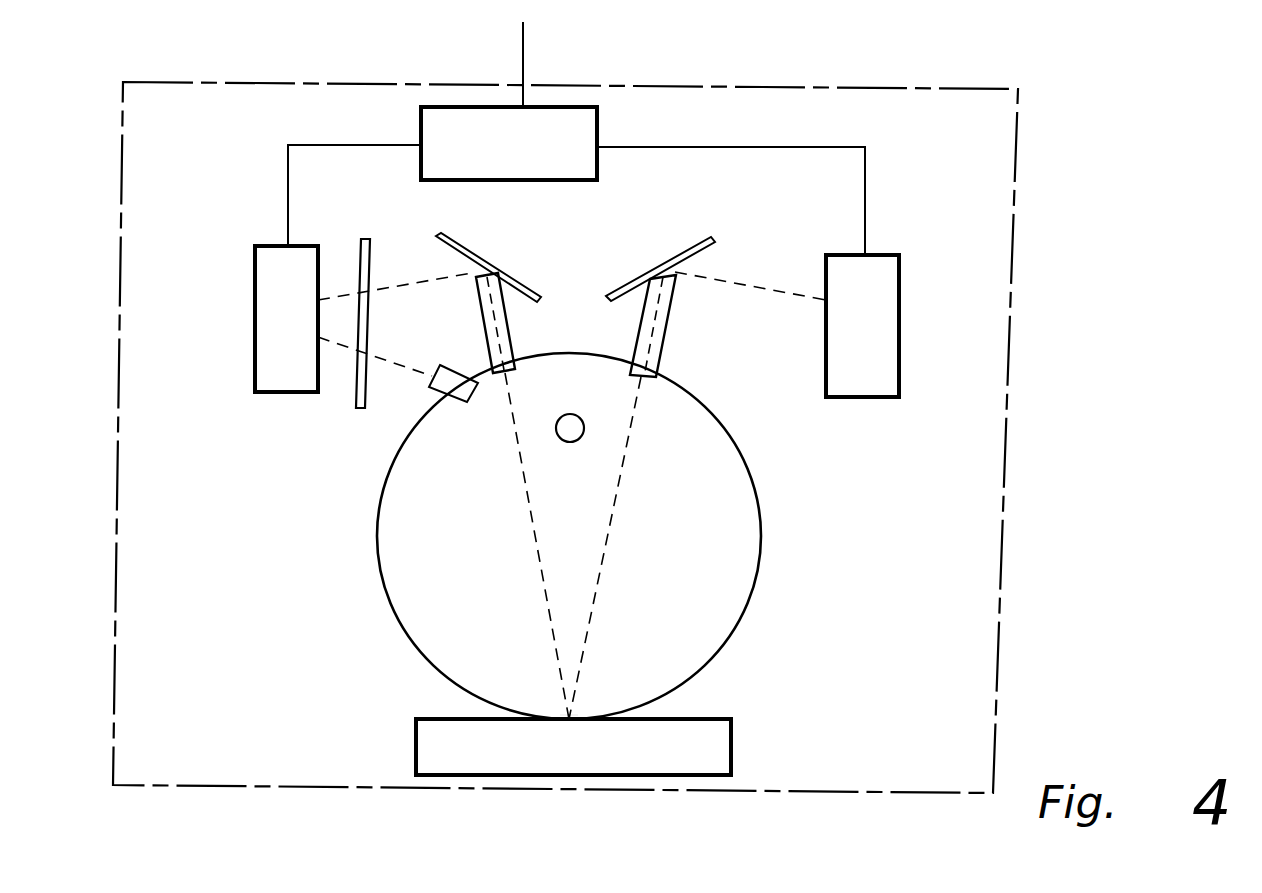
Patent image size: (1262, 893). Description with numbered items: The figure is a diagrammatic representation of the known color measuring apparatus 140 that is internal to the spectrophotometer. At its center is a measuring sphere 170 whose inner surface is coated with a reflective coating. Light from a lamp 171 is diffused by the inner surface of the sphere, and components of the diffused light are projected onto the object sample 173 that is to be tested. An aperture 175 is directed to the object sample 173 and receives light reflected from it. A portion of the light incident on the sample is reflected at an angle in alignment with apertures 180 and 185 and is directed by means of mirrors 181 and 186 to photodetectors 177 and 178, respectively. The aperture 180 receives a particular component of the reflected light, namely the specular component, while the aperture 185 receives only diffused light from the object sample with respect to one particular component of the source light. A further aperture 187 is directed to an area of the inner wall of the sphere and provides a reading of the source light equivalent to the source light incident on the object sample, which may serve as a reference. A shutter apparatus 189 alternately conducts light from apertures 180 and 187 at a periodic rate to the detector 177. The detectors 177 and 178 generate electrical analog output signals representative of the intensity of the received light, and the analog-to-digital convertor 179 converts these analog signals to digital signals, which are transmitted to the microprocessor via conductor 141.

The color measuring apparatus 140 is at (806, 84).
The conductor 141 is at (523, 68).
The measuring sphere 170 is at (762, 525).
The lamp 171 is at (576, 418).
The object sample 173 is at (731, 735).
The aperture 175 is at (590, 718).
The photodetector 177 is at (297, 393).
The photodetector 178 is at (899, 323).
The analog-to-digital convertor 179 is at (420, 128).
The aperture 180 is at (484, 334).
The mirror 181 is at (466, 252).
The aperture 185 is at (673, 341).
The mirror 186 is at (666, 268).
The aperture 187 is at (466, 402).
The shutter apparatus 189 is at (370, 238).